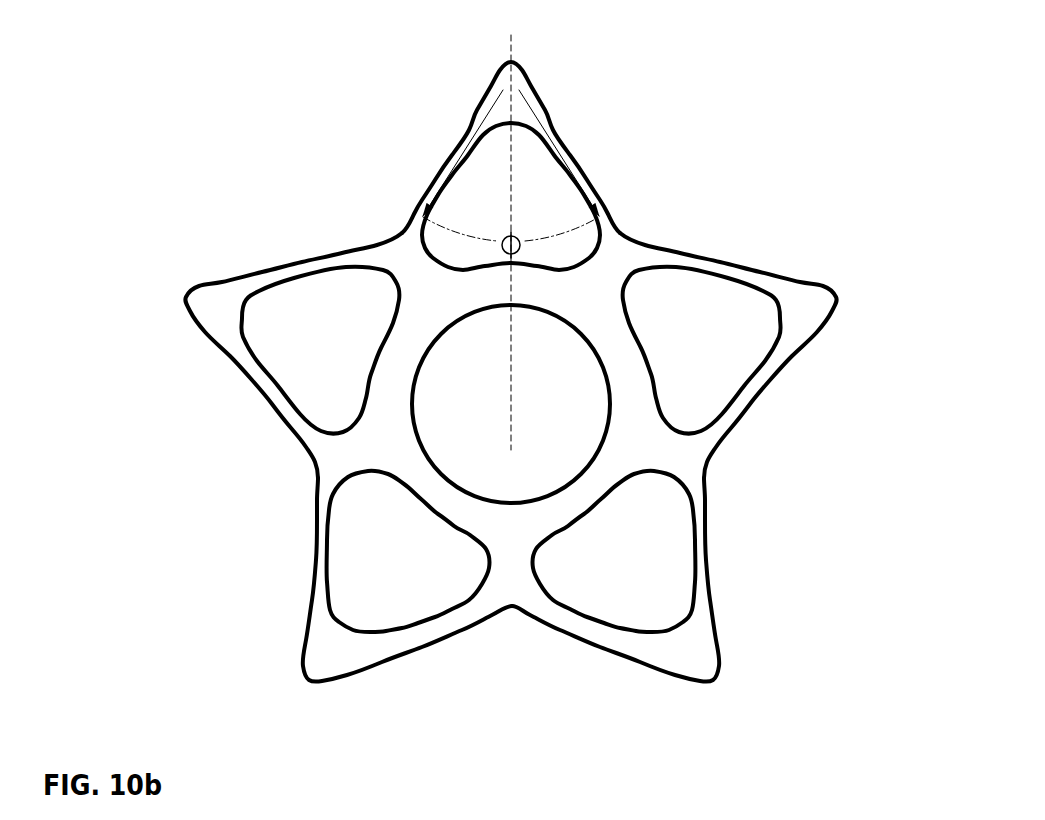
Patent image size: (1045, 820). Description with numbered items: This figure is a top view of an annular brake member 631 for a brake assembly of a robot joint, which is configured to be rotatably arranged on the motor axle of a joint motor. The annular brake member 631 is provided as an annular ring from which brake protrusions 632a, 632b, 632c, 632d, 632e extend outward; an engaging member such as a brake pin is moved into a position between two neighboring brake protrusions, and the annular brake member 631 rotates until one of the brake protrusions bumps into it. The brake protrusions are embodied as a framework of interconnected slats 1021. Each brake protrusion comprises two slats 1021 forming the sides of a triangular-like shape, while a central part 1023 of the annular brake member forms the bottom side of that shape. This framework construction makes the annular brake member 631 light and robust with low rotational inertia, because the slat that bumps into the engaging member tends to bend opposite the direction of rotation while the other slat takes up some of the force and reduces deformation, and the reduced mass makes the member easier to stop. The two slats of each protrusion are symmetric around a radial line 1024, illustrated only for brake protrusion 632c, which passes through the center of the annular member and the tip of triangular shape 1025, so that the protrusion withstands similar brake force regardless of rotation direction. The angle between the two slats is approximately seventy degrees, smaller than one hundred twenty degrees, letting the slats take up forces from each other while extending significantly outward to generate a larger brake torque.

The annular brake member 631 is at (524, 344).
The brake protrusion 632a is at (288, 625).
The brake protrusion 632b is at (227, 259).
The brake protrusion 632c is at (545, 58).
The brake protrusion 632d is at (807, 269).
The brake protrusion 632e is at (740, 645).
The slats 1021 is at (427, 195).
The central part 1023 is at (643, 360).
The radial line 1024 is at (510, 187).
The tip of triangular shape 1025 is at (506, 60).